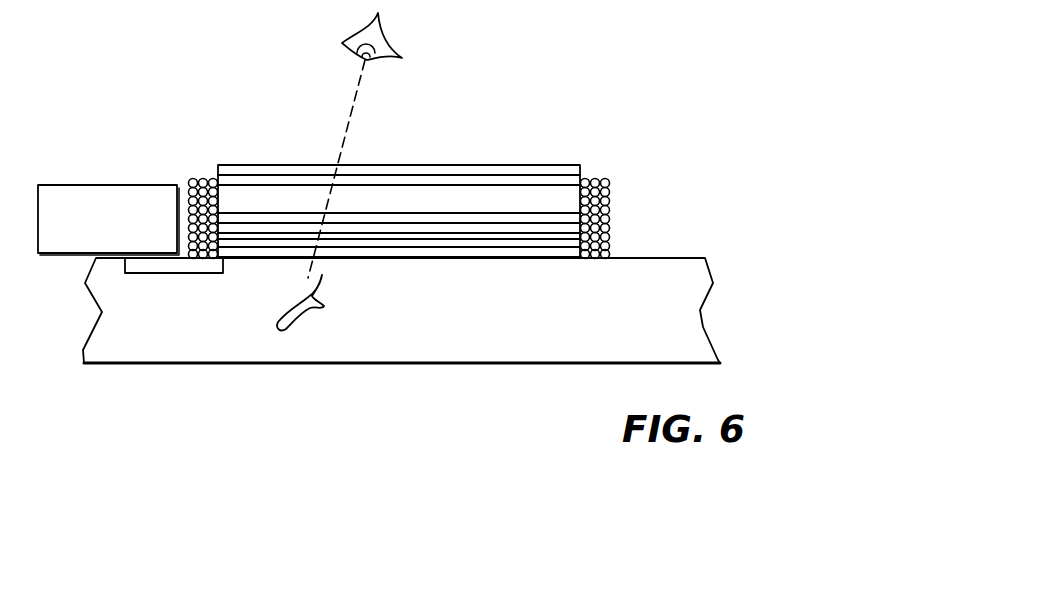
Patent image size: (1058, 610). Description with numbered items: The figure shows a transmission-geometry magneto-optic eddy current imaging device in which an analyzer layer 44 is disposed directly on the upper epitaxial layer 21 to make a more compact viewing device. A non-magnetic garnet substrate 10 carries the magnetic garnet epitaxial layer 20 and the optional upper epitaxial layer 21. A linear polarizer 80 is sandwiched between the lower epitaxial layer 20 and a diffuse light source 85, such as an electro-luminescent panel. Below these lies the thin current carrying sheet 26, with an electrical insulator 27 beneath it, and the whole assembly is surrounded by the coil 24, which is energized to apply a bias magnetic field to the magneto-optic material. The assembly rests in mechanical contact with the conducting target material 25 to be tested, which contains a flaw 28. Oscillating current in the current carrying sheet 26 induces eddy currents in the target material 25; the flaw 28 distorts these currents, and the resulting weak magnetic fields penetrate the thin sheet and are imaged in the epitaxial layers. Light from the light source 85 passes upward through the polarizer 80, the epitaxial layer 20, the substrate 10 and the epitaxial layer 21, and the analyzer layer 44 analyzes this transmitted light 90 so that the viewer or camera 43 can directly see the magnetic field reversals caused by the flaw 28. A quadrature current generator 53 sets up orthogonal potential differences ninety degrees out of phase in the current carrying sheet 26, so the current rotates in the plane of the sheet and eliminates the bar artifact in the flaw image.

The substrate 10 is at (399, 200).
The epitaxial layer 20 is at (537, 222).
The epitaxial layer 21 is at (528, 182).
The coil 24 is at (186, 181).
The target material 25 is at (708, 323).
The current carrying sheet 26 is at (609, 228).
The electrical insulator 27 is at (571, 258).
The flaw 28 is at (323, 303).
The viewer or camera 43 is at (362, 35).
The analyzer layer 44 is at (507, 167).
The quadrature current generator 53 is at (98, 185).
The polarizer 80 is at (552, 230).
The light source 85 is at (568, 240).
The light 90 is at (352, 100).